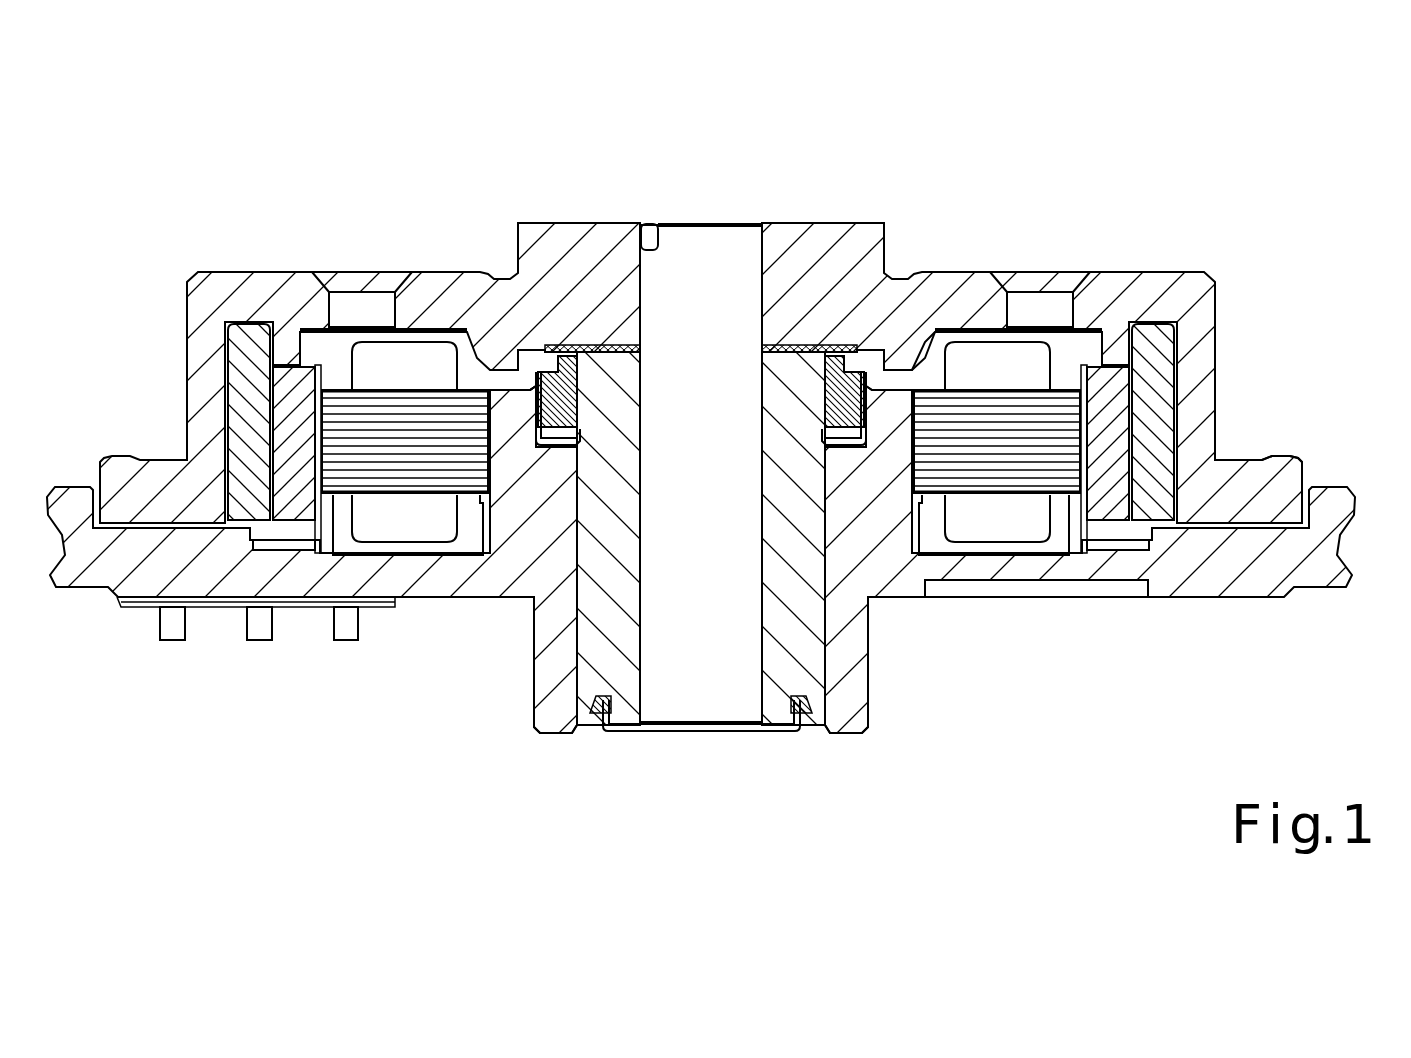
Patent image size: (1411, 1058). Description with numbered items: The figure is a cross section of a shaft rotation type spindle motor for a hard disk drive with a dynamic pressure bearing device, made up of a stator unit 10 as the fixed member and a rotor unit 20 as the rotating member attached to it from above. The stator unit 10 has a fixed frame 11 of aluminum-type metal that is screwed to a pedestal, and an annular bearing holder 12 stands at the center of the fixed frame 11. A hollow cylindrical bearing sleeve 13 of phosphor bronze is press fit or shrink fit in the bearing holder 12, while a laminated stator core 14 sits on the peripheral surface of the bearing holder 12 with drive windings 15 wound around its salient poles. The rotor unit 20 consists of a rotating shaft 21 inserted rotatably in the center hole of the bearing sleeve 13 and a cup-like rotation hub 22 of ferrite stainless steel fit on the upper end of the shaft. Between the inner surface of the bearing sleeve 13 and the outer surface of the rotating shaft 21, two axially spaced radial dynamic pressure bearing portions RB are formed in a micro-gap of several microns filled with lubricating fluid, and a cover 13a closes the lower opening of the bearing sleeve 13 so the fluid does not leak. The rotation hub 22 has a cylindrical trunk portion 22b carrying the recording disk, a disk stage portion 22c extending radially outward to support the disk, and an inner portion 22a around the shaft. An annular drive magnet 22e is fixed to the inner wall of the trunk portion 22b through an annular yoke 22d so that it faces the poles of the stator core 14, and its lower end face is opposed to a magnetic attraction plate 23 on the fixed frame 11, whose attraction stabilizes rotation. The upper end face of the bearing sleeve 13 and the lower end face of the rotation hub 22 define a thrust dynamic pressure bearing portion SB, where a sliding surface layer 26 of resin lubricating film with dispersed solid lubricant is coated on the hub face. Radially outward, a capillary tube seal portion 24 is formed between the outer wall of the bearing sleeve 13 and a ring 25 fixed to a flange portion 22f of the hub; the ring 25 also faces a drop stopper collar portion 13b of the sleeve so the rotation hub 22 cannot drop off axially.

The stator unit 10 is at (1092, 605).
The fixed frame 11 is at (1195, 585).
The bearing holder 12 is at (875, 510).
The bearing sleeve 13 is at (805, 630).
The cover 13a is at (700, 733).
The drop stopper collar portion 13b is at (567, 355).
The stator core 14 is at (980, 520).
The drive windings 15 is at (998, 470).
The rotor unit 20 is at (1056, 250).
The rotating shaft 21 is at (703, 220).
The rotation hub 22 is at (958, 270).
The inner cylindrical portion 22a is at (658, 243).
The trunk portion 22b is at (1217, 372).
The disk stage portion 22c is at (1275, 458).
The annular yoke 22d is at (240, 400).
The annular drive magnet 22e is at (292, 455).
The flange portion 22f is at (895, 332).
The magnetic attraction plate 23 is at (283, 545).
The capillary tube seal portion 24 is at (577, 436).
The ring 25 is at (535, 387).
The sliding surface layer 26 is at (807, 343).
The thrust dynamic pressure bearing portion SB is at (582, 346).
The radial dynamic pressure bearing portion RB is at (758, 392).